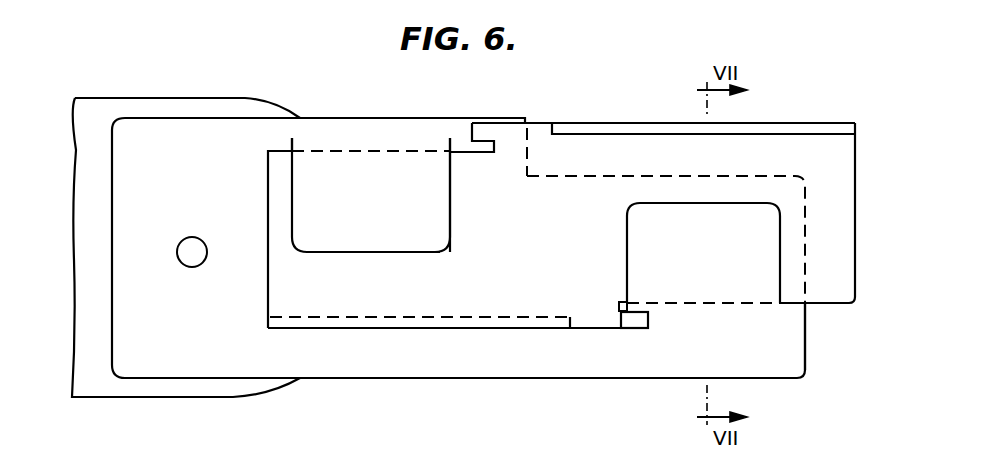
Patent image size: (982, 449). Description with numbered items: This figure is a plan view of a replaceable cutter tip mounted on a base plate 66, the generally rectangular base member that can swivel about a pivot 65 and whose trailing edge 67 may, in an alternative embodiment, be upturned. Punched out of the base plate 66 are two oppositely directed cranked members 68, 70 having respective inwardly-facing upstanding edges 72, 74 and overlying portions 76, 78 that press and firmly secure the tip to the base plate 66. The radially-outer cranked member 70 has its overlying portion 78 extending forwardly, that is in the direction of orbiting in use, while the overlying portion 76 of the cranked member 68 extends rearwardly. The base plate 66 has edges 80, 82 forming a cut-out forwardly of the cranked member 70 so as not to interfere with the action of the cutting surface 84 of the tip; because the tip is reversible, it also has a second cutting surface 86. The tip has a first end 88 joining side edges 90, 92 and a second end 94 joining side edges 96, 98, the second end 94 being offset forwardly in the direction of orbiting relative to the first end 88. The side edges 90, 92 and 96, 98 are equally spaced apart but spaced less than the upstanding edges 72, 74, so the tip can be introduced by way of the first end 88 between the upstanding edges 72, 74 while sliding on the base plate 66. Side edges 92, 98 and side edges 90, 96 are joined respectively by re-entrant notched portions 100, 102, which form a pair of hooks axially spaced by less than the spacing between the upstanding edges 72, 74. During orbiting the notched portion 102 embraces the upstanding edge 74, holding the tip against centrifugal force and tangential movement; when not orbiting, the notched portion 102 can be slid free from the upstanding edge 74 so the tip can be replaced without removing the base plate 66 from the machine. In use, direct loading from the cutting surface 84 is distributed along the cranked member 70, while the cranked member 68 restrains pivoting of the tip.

The pivot 65 is at (192, 267).
The base plate 66 is at (452, 364).
The trailing edge 67 is at (508, 380).
The cranked member 68 is at (415, 172).
The radially-outer cranked member 70 is at (657, 287).
The upstanding edge 72 is at (458, 150).
The upstanding edge 74 is at (619, 303).
The overlying portion 76 is at (371, 195).
The overlying portion 78 is at (703, 253).
The edge 80 is at (530, 142).
The edge 82 is at (603, 176).
The cutting surface 84 is at (688, 127).
The second cutting surface 86 is at (410, 330).
The first end 88 is at (268, 288).
The side edge 90 is at (284, 150).
The side edge 92 is at (303, 330).
The second end 94 is at (855, 162).
The side edge 96 is at (800, 124).
The side edge 98 is at (828, 304).
The re-entrant notched portion 100 is at (478, 134).
The re-entrant notched portion 102 is at (624, 330).